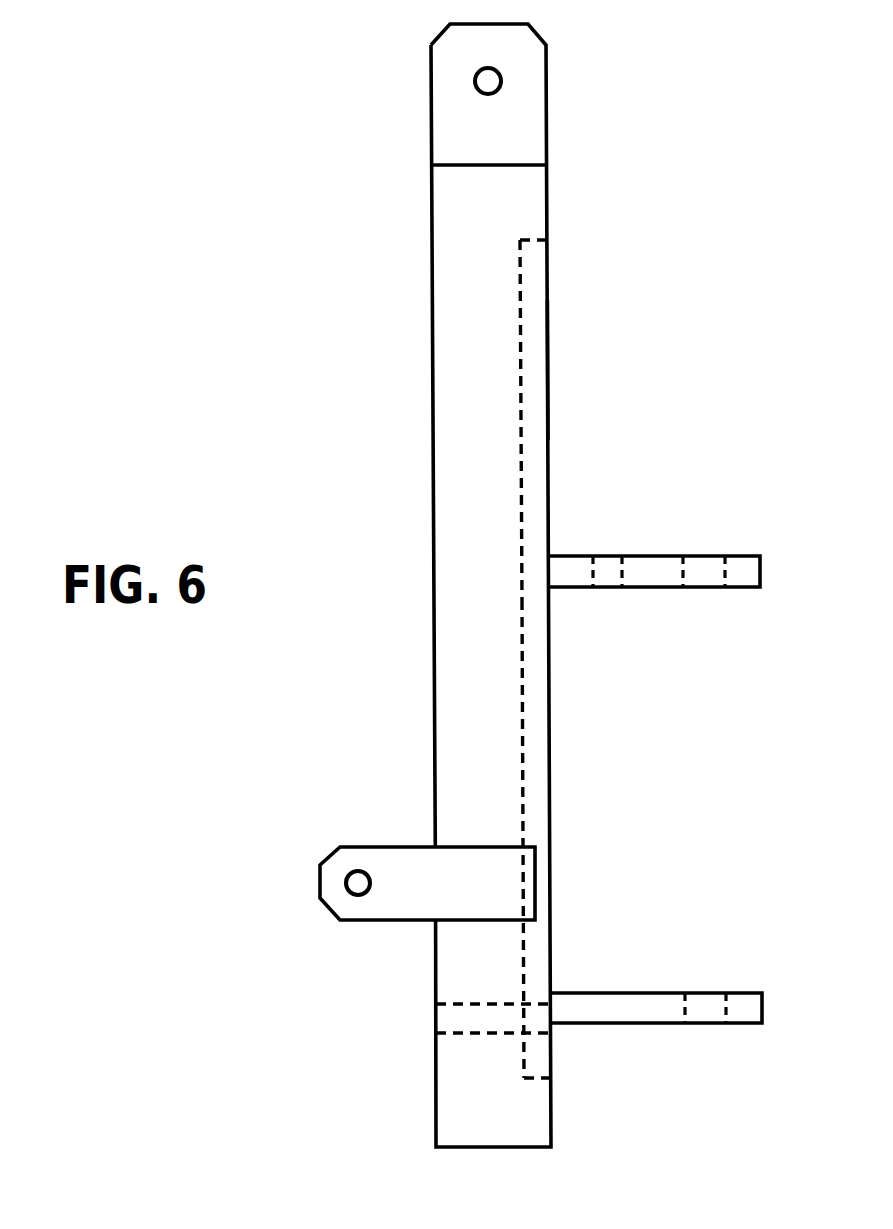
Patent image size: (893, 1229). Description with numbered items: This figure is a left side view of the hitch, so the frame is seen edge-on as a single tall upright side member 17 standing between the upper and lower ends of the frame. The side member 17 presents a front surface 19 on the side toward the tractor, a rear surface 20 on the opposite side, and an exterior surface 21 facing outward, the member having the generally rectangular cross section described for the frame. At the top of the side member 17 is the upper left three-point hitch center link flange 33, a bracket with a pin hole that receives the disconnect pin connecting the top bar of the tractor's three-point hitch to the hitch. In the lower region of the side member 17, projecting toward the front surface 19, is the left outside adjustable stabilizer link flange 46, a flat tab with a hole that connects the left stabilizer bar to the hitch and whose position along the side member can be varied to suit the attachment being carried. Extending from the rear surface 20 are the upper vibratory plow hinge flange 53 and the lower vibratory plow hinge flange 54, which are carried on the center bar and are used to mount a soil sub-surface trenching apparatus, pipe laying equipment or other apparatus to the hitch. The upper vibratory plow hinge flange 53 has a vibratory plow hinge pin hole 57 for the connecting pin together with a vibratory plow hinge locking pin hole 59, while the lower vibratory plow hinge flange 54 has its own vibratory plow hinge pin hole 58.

The side member 17 is at (478, 301).
The front surface 19 is at (430, 397).
The rear surface 20 is at (548, 367).
The exterior surface 21 is at (481, 569).
The upper left three-point hitch center link flange 33 is at (431, 82).
The left outside adjustable stabilizer link flange 46 is at (332, 858).
The upper vibratory plow hinge flange 53 is at (682, 569).
The lower vibratory plow hinge flange 54 is at (674, 1009).
The vibratory plow hinge pin hole 57 is at (708, 555).
The vibratory plow hinge pin hole 58 is at (707, 993).
The vibratory plow hinge locking pin hole 59 is at (606, 555).